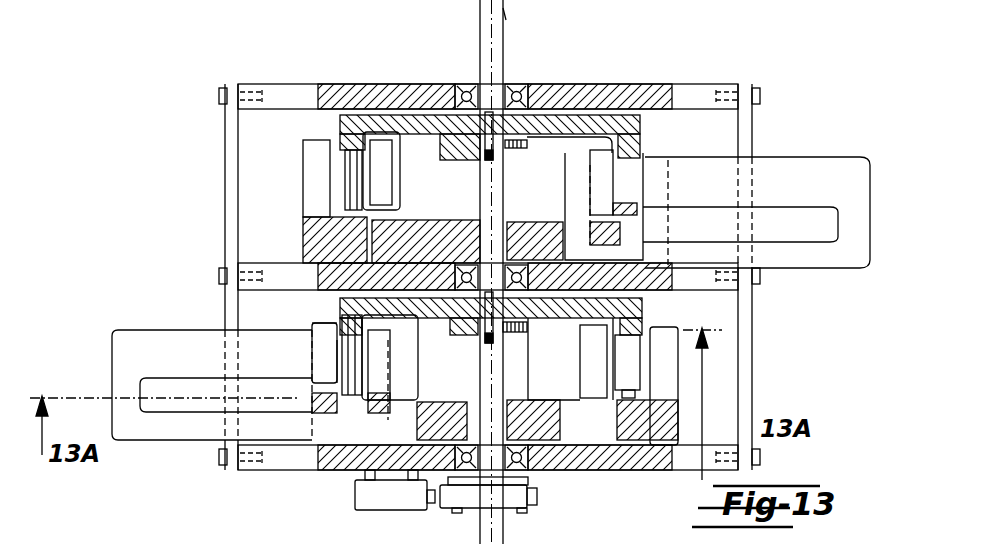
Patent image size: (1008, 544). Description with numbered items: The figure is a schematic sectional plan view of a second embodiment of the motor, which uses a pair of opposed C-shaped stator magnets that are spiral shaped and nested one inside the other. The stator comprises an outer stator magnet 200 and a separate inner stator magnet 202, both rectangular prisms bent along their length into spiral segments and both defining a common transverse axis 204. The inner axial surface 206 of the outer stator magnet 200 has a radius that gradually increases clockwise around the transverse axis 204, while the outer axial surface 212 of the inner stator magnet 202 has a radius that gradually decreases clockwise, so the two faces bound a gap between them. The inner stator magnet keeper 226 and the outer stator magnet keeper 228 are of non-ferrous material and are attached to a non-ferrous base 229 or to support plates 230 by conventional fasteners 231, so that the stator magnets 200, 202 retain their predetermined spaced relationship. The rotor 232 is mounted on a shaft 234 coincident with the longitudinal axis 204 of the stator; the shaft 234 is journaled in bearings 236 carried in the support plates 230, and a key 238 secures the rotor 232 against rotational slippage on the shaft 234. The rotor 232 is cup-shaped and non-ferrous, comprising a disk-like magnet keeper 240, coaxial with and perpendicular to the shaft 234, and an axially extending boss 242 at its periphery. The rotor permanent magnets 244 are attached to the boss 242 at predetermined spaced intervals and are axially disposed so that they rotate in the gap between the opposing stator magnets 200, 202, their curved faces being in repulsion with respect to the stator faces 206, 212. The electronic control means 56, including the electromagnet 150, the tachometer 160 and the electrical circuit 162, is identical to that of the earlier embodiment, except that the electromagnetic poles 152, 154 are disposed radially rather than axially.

The electronic control means 56 is at (808, 148).
The electromagnet 150 is at (838, 197).
The electromagnetic pole 152 is at (340, 362).
The electromagnetic pole 154 is at (328, 338).
The tachometer 160 is at (510, 508).
The electrical circuit 162 is at (357, 493).
The outer stator magnet 200 is at (312, 132).
The inner stator magnet 202 is at (388, 128).
The transverse axis 204 is at (500, 40).
The inner axial surface 206 is at (310, 180).
The outer axial surface 212 is at (340, 205).
The inner stator magnet keeper 226 is at (400, 225).
The outer stator magnet keeper 228 is at (308, 243).
The non-ferrous base 229 is at (240, 147).
The support plate 230 is at (285, 95).
The fastener 231 is at (762, 96).
The rotor 232 is at (378, 100).
The shaft 234 is at (506, 20).
The bearing 236 is at (527, 85).
The key 238 is at (505, 162).
The magnet keeper 240 is at (510, 267).
The boss 242 is at (650, 157).
The rotor permanent magnet 244 is at (322, 197).